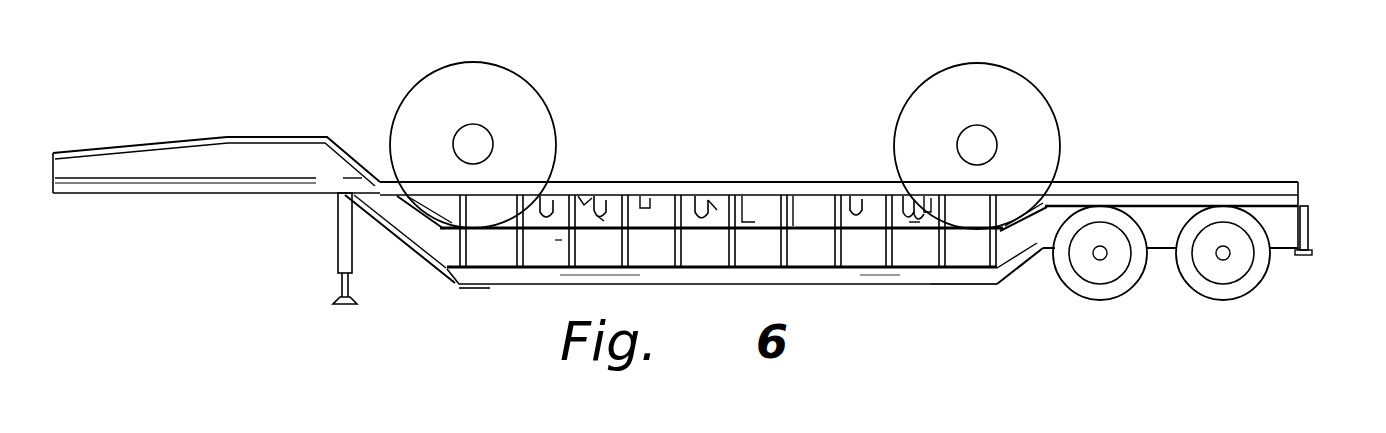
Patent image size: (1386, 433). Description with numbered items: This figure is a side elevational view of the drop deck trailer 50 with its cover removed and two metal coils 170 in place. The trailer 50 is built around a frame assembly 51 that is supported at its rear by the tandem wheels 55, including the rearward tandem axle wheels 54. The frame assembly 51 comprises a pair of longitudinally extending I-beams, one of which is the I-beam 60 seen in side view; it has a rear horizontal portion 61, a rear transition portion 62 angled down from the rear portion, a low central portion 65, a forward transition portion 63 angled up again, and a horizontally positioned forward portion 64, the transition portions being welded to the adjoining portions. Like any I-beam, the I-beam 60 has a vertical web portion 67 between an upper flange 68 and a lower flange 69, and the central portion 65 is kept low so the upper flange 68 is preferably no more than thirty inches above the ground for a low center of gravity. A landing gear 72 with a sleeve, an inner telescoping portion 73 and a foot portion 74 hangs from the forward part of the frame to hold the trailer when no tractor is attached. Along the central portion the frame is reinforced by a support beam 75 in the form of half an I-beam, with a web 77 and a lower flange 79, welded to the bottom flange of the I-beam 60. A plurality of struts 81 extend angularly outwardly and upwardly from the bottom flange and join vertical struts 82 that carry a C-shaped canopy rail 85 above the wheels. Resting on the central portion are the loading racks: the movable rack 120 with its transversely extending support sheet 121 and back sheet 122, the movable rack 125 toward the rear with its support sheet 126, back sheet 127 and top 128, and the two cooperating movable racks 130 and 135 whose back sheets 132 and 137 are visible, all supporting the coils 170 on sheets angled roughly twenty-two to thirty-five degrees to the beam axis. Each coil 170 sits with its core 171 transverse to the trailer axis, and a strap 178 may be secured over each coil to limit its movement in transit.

The drop deck trailer 50 is at (1212, 80).
The frame assembly 51 is at (1152, 178).
The rearward tandem axle wheels 54 is at (1257, 290).
The tandem wheels 55 is at (1133, 292).
The I-beam 60 is at (225, 133).
The rear horizontal portion 61 is at (1311, 232).
The rear transition portion 62 is at (1025, 240).
The forward transition portion 63 is at (420, 242).
The forward portion 64 is at (151, 165).
The central portion 65 is at (757, 248).
The web portion 67 is at (531, 243).
The upper flange 68 is at (794, 226).
The lower flange 69 is at (590, 268).
The landing gear 72 is at (343, 243).
The inner telescoping portion 73 is at (343, 292).
The foot portion 74 is at (345, 306).
The support beam 75 is at (949, 287).
The web 77 is at (875, 273).
The lower flange 79 is at (993, 287).
The strut 81 is at (631, 247).
The strut 82 is at (693, 226).
The canopy rail 85 is at (597, 205).
The movable rack 120 is at (583, 190).
The support sheet 121 is at (548, 203).
The back sheet 122 is at (557, 243).
The movable rack 125 is at (915, 216).
The support sheet 126 is at (929, 210).
The back sheet 127 is at (908, 210).
The top 128 is at (913, 212).
The movable rack 130 is at (639, 210).
The back sheet 132 is at (601, 212).
The movable rack 135 is at (717, 205).
The back sheet 137 is at (743, 226).
The metal coil 170 is at (427, 78).
The core 171 is at (463, 138).
The strap 178 is at (1137, 425).